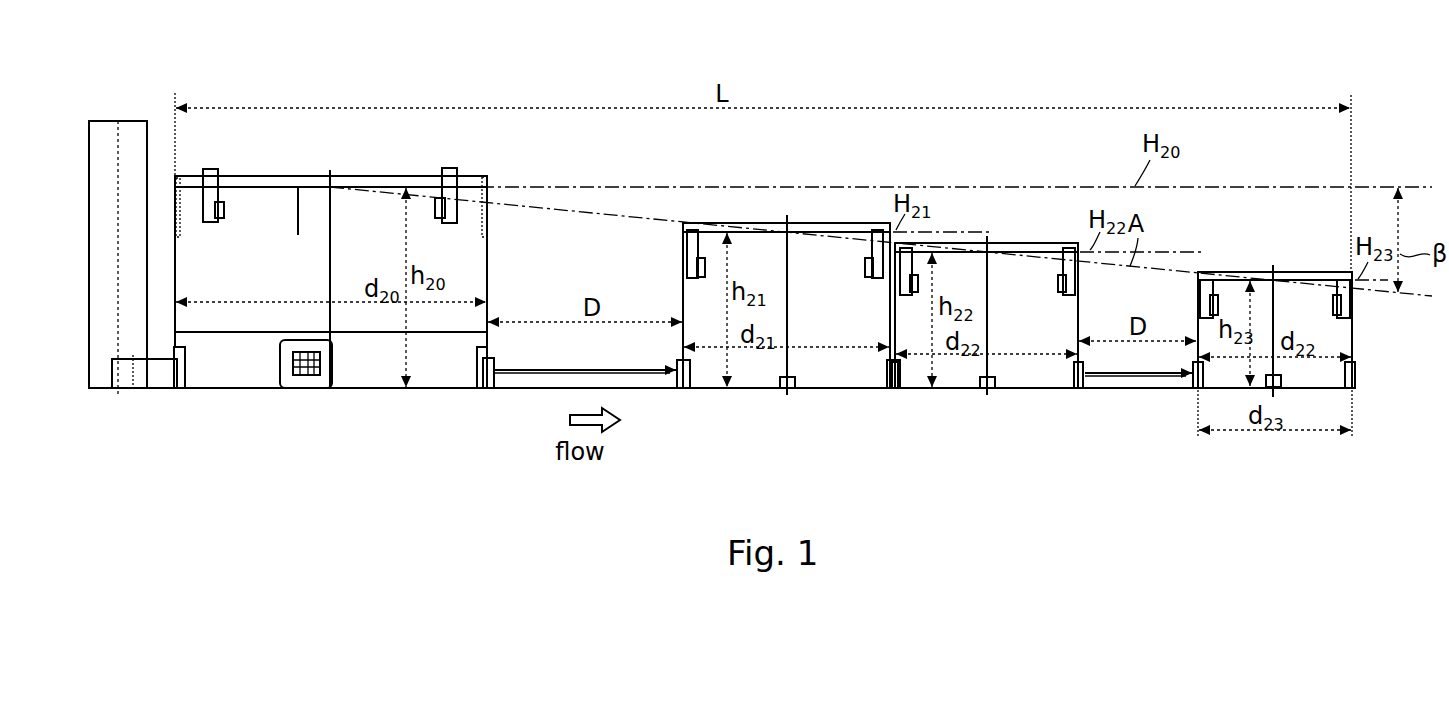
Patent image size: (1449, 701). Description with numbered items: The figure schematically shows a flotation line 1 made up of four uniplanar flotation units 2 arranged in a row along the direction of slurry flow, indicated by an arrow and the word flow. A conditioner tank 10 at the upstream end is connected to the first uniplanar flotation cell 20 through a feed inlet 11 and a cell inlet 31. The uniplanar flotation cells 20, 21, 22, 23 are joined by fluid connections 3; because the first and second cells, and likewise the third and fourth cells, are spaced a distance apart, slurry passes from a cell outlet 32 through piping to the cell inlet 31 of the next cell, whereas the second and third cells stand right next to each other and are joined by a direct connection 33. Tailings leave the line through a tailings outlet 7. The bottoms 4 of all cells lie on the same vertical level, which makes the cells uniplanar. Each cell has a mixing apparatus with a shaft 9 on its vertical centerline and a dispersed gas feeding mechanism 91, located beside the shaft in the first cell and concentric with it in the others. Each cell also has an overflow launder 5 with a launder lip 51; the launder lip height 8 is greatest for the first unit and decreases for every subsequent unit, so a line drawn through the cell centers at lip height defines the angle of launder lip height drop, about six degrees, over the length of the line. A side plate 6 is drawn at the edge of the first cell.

The flotation line 1 is at (459, 60).
The uniplanar flotation unit 2 is at (267, 434).
The fluid connection 3 is at (560, 374).
The bottom 4 is at (416, 390).
The overflow launder 5 is at (490, 184).
The side plate 6 is at (492, 216).
The tailings outlet 7 is at (1357, 375).
The launder lip height 8 is at (334, 186).
The shaft 9 is at (318, 190).
The conditioner tank 10 is at (132, 121).
The feed inlet 11 is at (173, 390).
The first uniplanar flotation cell 20 is at (331, 261).
The second uniplanar flotation cell 21 is at (786, 305).
The third uniplanar flotation cell 22 is at (986, 315).
The fourth uniplanar flotation cell 23 is at (1275, 330).
The cell inlet 31 is at (184, 390).
The cell outlet 32 is at (486, 390).
The direct connection 33 is at (893, 390).
The launder lip 51 is at (262, 183).
The dispersed gas feeding mechanism 91 is at (320, 388).